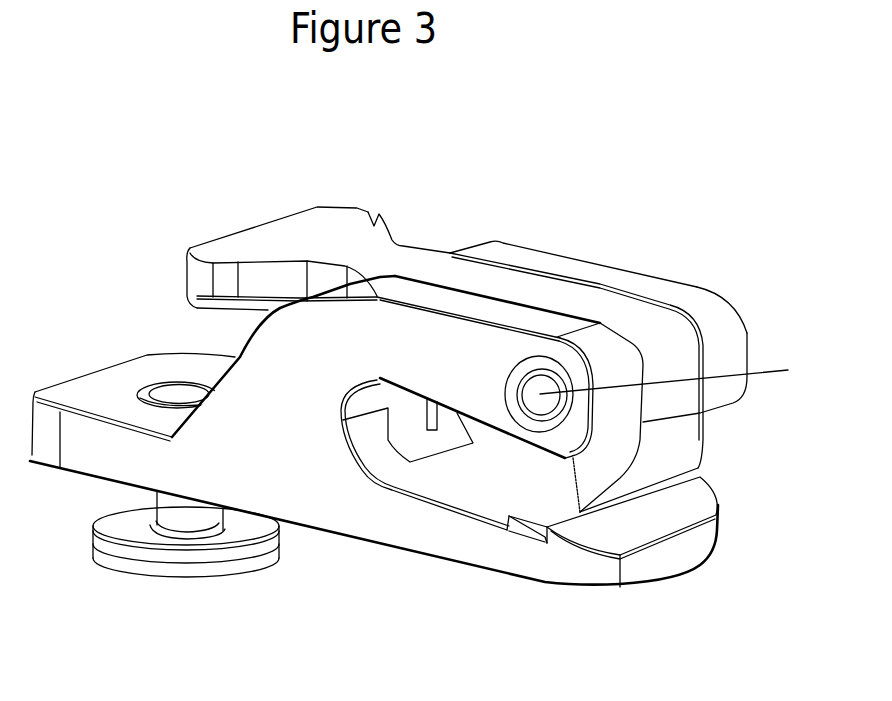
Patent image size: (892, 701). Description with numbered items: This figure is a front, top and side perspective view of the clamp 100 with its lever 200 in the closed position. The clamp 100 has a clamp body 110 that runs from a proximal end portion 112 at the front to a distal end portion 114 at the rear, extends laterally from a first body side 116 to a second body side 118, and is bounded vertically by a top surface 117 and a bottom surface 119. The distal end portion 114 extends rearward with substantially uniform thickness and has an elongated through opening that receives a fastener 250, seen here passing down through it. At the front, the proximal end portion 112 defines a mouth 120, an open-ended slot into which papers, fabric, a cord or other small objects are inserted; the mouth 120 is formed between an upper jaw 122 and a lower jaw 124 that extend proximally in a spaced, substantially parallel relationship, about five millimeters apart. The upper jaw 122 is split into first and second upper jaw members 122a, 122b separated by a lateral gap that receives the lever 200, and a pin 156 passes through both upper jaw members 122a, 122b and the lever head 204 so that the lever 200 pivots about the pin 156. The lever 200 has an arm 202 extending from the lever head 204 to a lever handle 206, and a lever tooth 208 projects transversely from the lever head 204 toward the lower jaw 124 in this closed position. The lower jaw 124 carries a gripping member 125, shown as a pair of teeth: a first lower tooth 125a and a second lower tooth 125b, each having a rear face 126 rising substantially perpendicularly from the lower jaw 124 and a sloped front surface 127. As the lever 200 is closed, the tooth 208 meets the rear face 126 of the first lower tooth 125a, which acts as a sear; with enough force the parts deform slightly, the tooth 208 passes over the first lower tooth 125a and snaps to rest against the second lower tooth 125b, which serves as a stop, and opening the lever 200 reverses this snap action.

The clamp 100 is at (93, 130).
The clamp body 110 is at (300, 463).
The proximal end portion 112 is at (677, 283).
The distal end portion 114 is at (100, 386).
The first body side 116 is at (742, 290).
The top surface 117 is at (530, 252).
The second body side 118 is at (304, 391).
The bottom surface 119 is at (390, 558).
The mouth 120 is at (715, 440).
The upper jaw 122 is at (630, 282).
The first upper jaw member 122a is at (403, 293).
The second upper jaw member 122b is at (560, 262).
The lower jaw 124 is at (370, 523).
The gripping member 125 is at (548, 541).
The first lower tooth 125a is at (510, 512).
The second lower tooth 125b is at (692, 493).
The rear face 126 is at (495, 512).
The sloped front surface 127 is at (533, 516).
The pin 156 is at (684, 372).
The lever 200 is at (363, 247).
The arm 202 is at (465, 275).
The lever head 204 is at (668, 387).
The lever handle 206 is at (210, 240).
The lever tooth 208 is at (605, 472).
The fastener 250 is at (177, 390).